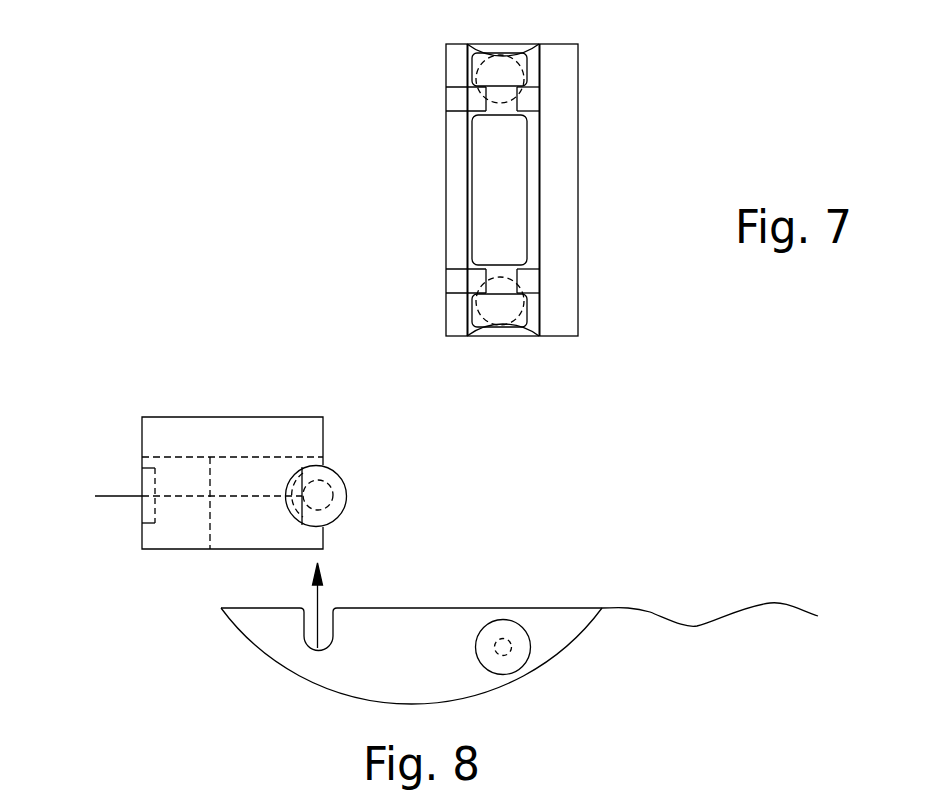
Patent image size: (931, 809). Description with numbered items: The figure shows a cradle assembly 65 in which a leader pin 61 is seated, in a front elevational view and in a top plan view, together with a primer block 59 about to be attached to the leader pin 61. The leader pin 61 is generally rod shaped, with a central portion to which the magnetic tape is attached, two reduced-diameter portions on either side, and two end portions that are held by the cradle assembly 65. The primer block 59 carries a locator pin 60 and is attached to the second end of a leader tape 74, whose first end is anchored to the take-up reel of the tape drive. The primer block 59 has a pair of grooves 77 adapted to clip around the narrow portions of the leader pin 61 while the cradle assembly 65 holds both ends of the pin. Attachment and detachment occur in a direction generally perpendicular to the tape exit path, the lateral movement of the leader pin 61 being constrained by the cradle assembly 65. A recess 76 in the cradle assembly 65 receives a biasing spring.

In FIG. 8, the primer block 59 is at (403, 628).
In FIG. 8, the locator pin 60 is at (510, 630).
In FIG. 7, the leader pin 61 is at (493, 197).
In FIG. 8, the leader pin 61 is at (330, 480).
In FIG. 7, the cradle assembly 65 is at (453, 278).
In FIG. 8, the cradle assembly 65 is at (222, 437).
In FIG. 8, the leader tape 74 is at (117, 496).
In FIG. 8, the recess 76 is at (148, 507).
In FIG. 8, the grooves 77 is at (307, 665).